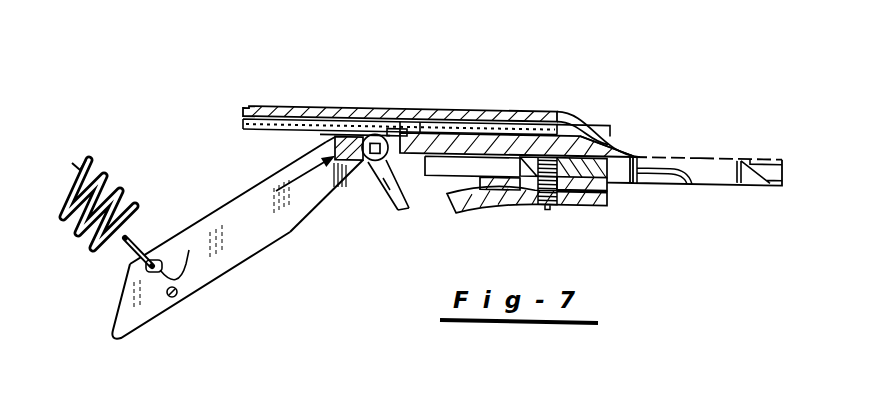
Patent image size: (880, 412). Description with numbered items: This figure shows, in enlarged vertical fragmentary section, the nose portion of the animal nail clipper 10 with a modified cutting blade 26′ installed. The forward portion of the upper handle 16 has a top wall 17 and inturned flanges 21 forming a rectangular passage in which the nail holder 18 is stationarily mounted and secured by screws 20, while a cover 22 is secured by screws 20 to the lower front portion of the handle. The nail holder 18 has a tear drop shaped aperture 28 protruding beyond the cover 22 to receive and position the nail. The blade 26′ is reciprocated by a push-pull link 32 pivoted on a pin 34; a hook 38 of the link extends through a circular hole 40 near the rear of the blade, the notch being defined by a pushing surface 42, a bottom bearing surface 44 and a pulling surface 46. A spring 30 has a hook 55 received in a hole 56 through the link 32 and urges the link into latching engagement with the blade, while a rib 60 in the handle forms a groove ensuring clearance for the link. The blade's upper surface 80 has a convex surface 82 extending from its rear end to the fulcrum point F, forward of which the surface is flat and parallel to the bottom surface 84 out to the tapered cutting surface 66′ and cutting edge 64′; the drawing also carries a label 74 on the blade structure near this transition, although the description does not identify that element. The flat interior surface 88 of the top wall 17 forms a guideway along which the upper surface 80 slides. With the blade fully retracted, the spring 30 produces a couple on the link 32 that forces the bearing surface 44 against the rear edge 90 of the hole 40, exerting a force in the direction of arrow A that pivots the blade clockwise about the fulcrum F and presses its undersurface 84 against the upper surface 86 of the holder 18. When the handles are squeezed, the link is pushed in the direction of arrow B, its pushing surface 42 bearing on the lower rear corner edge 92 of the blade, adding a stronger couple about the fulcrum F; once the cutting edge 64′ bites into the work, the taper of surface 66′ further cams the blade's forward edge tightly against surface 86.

The animal nail clipper 10 is at (227, 103).
The upper handle 16 is at (254, 105).
The top wall 17 is at (243, 123).
The nail holder 18 is at (762, 183).
The screws 20 is at (563, 208).
The inturned flanges 21 is at (622, 200).
The cover 22 is at (504, 205).
The modified cutting blade 26′ is at (540, 114).
The tear drop shaped aperture 28 is at (677, 188).
The spring 30 is at (100, 157).
The push-pull link 32 is at (213, 283).
The pin 34 is at (171, 298).
The hook 38 is at (392, 120).
The circular hole 40 is at (404, 126).
The pushing surface 42 is at (330, 165).
The bottom bearing surface 44 is at (350, 190).
The pulling surface 46 is at (406, 206).
The hook 55 is at (150, 233).
The hole 56 is at (184, 262).
The rib 60 is at (499, 108).
The cutting edge 64′ is at (660, 157).
The tapered cutting surface 66′ is at (631, 150).
The tapered portion 74 is at (620, 138).
The upper surface 80 is at (575, 130).
The convex surface 82 is at (363, 133).
The bottom surface 84 is at (418, 160).
The upper surface 86 is at (750, 157).
The interior surface 88 is at (290, 134).
The rear edge 90 is at (378, 134).
The lower rear corner edge 92 is at (348, 136).
The force arrow A is at (397, 193).
The force arrow B is at (278, 177).
The fulcrum point F is at (468, 132).